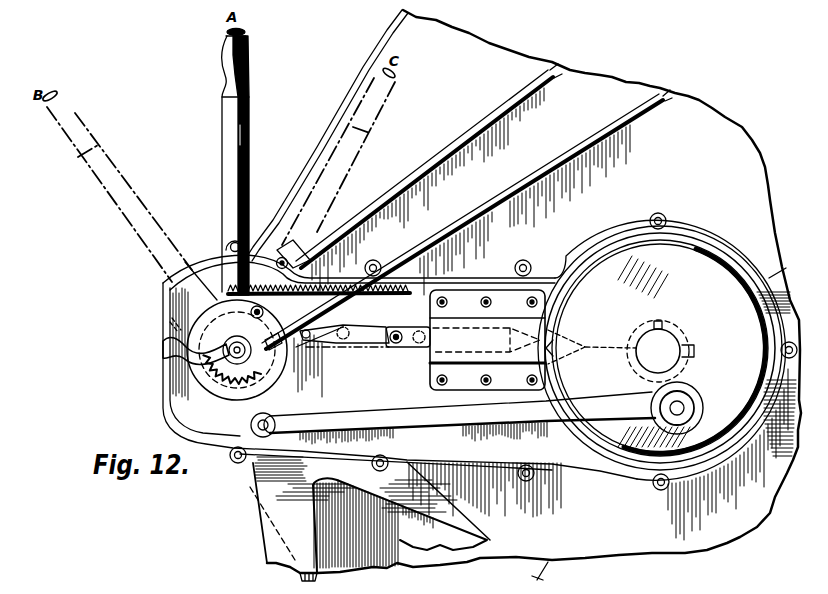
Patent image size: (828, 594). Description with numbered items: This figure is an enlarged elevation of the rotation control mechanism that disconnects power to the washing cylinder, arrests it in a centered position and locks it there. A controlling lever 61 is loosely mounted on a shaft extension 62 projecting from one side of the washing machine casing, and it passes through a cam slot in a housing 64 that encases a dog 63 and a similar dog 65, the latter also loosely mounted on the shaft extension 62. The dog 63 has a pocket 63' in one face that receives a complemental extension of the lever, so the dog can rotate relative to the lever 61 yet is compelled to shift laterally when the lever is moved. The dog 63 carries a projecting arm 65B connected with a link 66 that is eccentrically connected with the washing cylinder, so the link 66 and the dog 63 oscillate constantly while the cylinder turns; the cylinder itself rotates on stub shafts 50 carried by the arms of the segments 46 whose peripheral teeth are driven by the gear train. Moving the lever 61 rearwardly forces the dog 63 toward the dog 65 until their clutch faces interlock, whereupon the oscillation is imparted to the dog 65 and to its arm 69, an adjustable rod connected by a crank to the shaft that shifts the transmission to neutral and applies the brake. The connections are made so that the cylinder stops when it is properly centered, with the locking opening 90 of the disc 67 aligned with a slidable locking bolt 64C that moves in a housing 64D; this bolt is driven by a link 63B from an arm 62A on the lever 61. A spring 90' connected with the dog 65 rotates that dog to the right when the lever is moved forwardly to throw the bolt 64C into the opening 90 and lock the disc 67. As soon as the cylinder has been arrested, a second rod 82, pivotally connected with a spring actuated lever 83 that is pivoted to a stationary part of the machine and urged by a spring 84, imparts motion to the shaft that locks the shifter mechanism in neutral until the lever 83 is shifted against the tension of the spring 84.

The segments 46 is at (265, 528).
The stub shafts 50 is at (660, 351).
The controlling lever 61 is at (232, 137).
The shaft extension 62 is at (308, 372).
The arm 62A is at (309, 334).
The dog 63 is at (237, 373).
The pocket 63' is at (160, 322).
The link 63B is at (371, 334).
The housing 64 is at (592, 460).
The slidable locking bolt 64C is at (416, 348).
The housing 64D is at (459, 325).
The dog 65 is at (193, 382).
The projecting arm 65B is at (277, 416).
The link 66 is at (455, 428).
The disc 67 is at (660, 348).
The arm 69 is at (394, 176).
The second rod 82 is at (465, 219).
The spring actuated lever 83 is at (165, 349).
The spring 84 is at (218, 370).
The locking opening 90 is at (603, 307).
The spring 90' is at (319, 276).